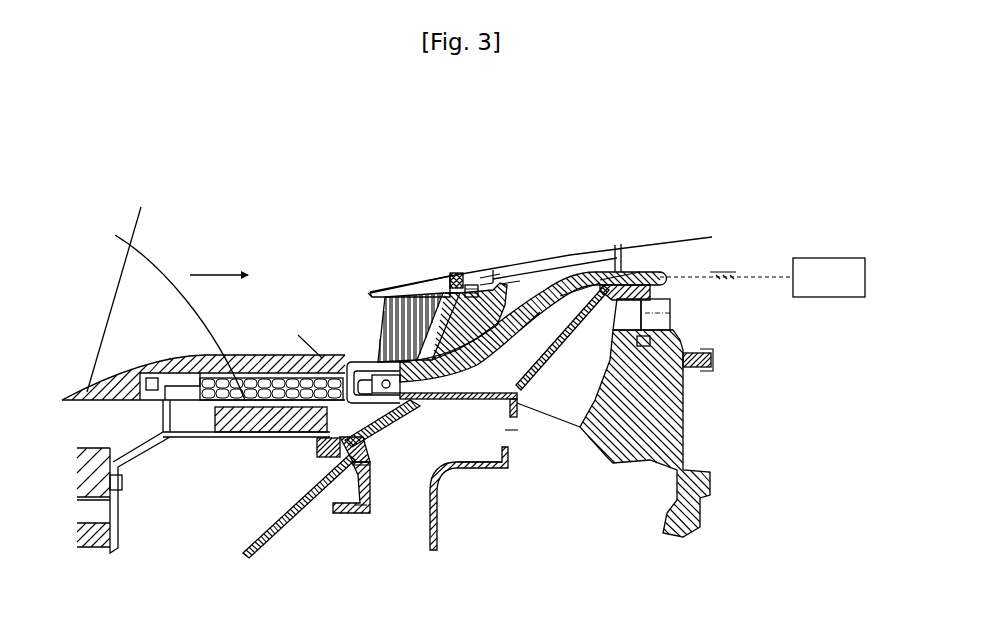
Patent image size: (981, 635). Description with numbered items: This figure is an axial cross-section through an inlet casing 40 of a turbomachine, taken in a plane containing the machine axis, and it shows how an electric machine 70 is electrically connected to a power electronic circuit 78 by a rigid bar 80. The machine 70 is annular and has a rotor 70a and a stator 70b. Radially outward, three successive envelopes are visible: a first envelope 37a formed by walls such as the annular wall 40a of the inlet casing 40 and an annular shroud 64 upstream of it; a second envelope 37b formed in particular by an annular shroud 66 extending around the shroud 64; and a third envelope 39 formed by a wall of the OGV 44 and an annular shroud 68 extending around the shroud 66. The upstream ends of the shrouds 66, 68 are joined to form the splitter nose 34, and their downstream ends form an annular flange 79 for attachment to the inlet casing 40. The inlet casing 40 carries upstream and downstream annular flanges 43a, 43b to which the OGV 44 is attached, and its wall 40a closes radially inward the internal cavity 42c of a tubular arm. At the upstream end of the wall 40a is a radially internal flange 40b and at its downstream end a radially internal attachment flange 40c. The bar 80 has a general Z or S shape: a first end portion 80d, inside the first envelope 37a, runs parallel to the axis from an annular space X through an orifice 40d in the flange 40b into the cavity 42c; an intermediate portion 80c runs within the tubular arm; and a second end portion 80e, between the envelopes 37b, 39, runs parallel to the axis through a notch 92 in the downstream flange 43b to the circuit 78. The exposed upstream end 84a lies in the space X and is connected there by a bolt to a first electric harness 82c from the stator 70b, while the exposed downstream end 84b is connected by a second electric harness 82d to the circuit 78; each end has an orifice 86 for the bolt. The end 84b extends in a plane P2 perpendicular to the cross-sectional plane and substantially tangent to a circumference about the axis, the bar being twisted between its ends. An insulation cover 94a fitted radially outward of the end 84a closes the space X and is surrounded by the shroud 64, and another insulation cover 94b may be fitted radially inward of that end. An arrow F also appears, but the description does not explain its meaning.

The splitter nose 34 is at (379, 289).
The first envelope 37a is at (549, 424).
The second envelope 37b is at (381, 289).
The third envelope 39 is at (546, 247).
The inlet casing 40 is at (576, 343).
The annular wall of inlet casing 40a is at (511, 430).
The radially internal annular flange 40b is at (442, 468).
The radially internal annular attachment flange 40c is at (522, 415).
The orifice 40d is at (400, 365).
The internal cavity 42c is at (543, 335).
The upstream annular flange 43a is at (500, 262).
The downstream annular flange 43b is at (633, 268).
The OGV 44 is at (490, 224).
The annular shroud 64 is at (352, 370).
The annular shroud 66 is at (395, 320).
The annular shroud 68 is at (430, 275).
The electric machine 70 is at (182, 350).
The rotor 70a is at (275, 410).
The stator 70b is at (115, 235).
The power electronic circuit 78 is at (829, 277).
The annular flange 79 is at (483, 277).
The rigid bar 80 is at (558, 422).
The intermediate portion 80c is at (465, 400).
The first end portion 80d is at (428, 276).
The second end portion 80e is at (617, 265).
The first electric harness 82c is at (328, 462).
The second electric harness 82d is at (759, 285).
The upstream end 84a is at (378, 412).
The downstream end 84b is at (668, 272).
The orifice 86 is at (402, 405).
The notch 92 is at (657, 270).
The insulation cover 94a is at (362, 350).
The insulation cover 94b is at (362, 408).
The flow direction F is at (212, 274).
The annular space X is at (308, 334).
The plane P2 is at (722, 268).